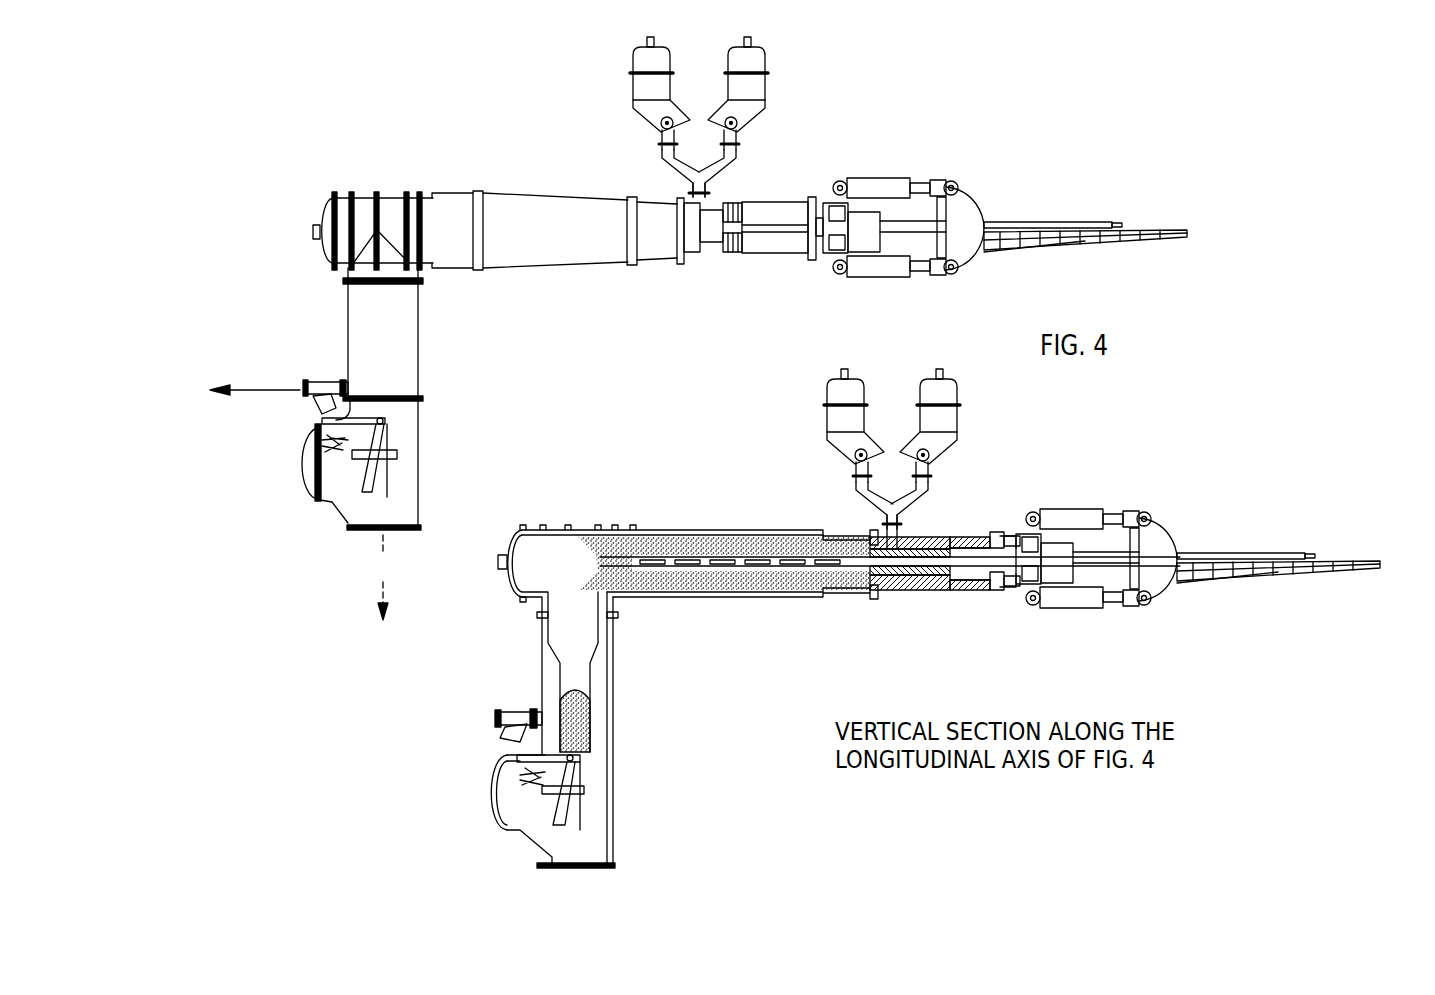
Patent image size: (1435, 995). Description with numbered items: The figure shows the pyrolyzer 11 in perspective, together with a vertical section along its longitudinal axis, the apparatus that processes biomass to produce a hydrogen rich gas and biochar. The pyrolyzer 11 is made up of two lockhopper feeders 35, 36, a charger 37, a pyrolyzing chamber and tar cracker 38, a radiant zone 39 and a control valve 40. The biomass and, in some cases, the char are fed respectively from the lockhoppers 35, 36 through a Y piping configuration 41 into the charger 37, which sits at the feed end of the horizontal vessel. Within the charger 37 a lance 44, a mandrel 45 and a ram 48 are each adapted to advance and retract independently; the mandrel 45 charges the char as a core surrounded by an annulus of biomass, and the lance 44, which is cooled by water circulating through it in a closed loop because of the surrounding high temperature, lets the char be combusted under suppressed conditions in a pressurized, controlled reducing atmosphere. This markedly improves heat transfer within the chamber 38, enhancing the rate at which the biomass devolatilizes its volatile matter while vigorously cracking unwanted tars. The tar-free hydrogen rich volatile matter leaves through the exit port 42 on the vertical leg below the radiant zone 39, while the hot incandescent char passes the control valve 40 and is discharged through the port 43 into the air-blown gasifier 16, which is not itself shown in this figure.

The pyrolyzer 11 is at (622, 454).
The gasifier 16 is at (336, 725).
The lockhopper feeder 35 is at (985, 410).
The lockhopper feeder 36 is at (826, 416).
The charger 37 is at (988, 322).
The pyrolyzing chamber and tar cracker 38 is at (612, 700).
The radiant zone 39 is at (561, 577).
The control valve 40 is at (300, 485).
The Y piping configuration 41 is at (636, 167).
The exit port 42 is at (522, 703).
The port 43 is at (593, 886).
The lance 44 is at (913, 562).
The mandrel 45 is at (933, 590).
The ram 48 is at (957, 528).